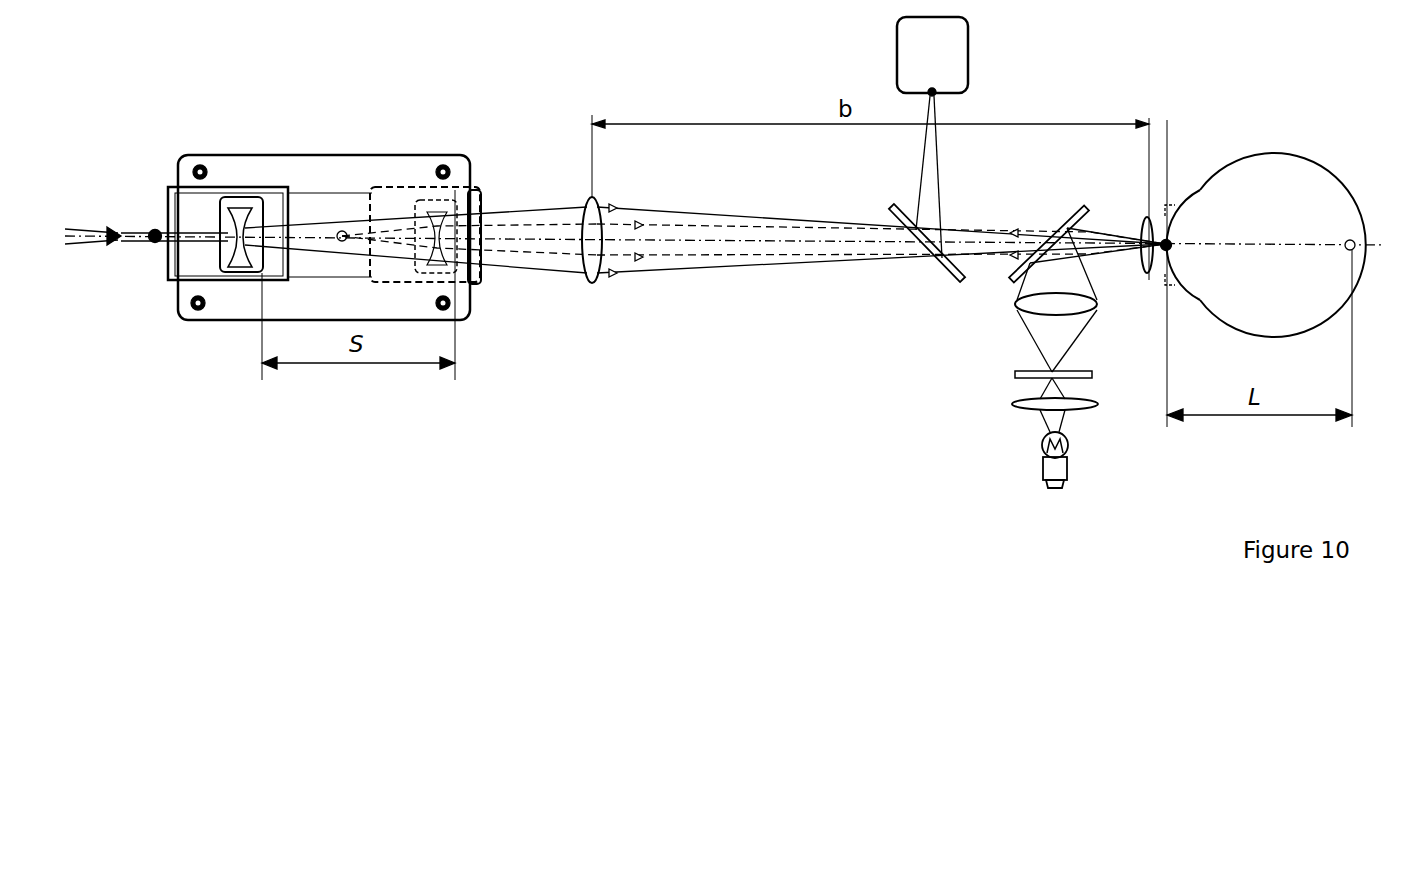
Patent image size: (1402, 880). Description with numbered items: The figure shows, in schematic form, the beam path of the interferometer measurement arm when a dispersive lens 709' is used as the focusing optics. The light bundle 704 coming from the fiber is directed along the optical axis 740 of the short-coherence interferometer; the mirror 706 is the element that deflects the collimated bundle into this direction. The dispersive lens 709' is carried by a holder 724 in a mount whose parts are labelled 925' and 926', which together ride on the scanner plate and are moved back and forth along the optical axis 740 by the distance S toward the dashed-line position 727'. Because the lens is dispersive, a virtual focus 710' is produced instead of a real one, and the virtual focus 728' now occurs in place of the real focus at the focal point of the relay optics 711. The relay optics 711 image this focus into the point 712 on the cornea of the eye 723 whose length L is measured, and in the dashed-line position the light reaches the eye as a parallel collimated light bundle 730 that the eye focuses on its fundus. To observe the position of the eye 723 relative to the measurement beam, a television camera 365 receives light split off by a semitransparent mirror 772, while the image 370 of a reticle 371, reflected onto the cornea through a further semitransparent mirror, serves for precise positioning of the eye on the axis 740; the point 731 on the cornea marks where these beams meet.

The light bundle 704 is at (151, 230).
The focus 710' is at (97, 200).
The housing 926' is at (272, 205).
The mounting block 925' is at (223, 201).
The holder 724 is at (248, 277).
The dispersive lens 709' is at (201, 239).
The virtual focus 728' is at (296, 166).
The position shown in dashed lines 727' is at (453, 189).
The collimated light bundle 730 is at (695, 225).
The relay optics 711 is at (594, 197).
The television camera 365 is at (967, 82).
The beam splitter 772 is at (960, 282).
The reticle 371 is at (1015, 380).
The image of reticle 370 is at (1163, 187).
The point 712 is at (1153, 230).
The focal spot 731 is at (1150, 275).
The eye 723 is at (1197, 218).
The mirror 706 is at (1353, 238).
The optical axis 740 is at (1373, 250).